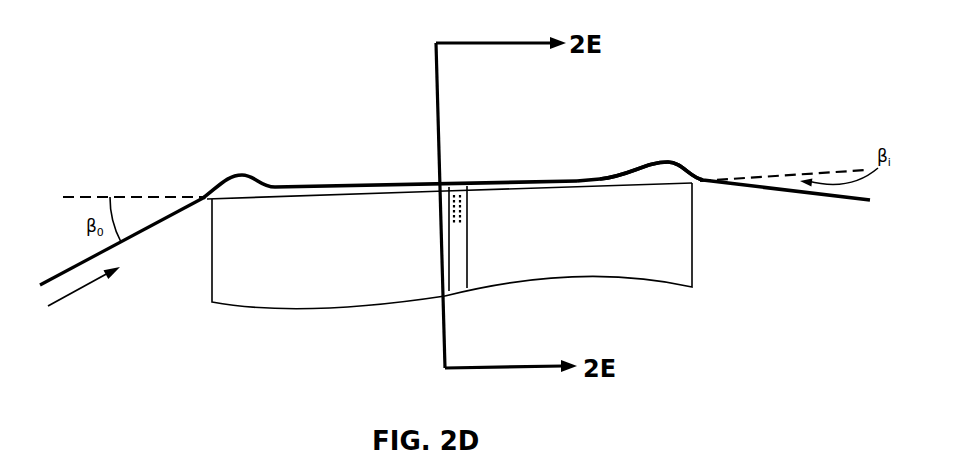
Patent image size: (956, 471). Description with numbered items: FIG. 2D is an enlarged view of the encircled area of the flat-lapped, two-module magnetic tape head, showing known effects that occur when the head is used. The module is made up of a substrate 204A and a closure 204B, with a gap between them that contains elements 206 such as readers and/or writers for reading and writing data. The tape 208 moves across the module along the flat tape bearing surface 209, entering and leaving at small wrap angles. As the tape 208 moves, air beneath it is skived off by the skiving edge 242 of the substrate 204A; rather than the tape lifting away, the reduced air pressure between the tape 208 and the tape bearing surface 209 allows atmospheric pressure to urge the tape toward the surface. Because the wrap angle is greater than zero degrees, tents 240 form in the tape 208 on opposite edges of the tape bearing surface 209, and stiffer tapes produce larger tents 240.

The substrate 204A is at (317, 297).
The closure 204B is at (600, 254).
The elements 206 is at (457, 185).
The tape 208 is at (330, 186).
The tape bearing surface 209 is at (577, 175).
The tents 240 is at (226, 165).
The skiving edge 242 is at (200, 207).